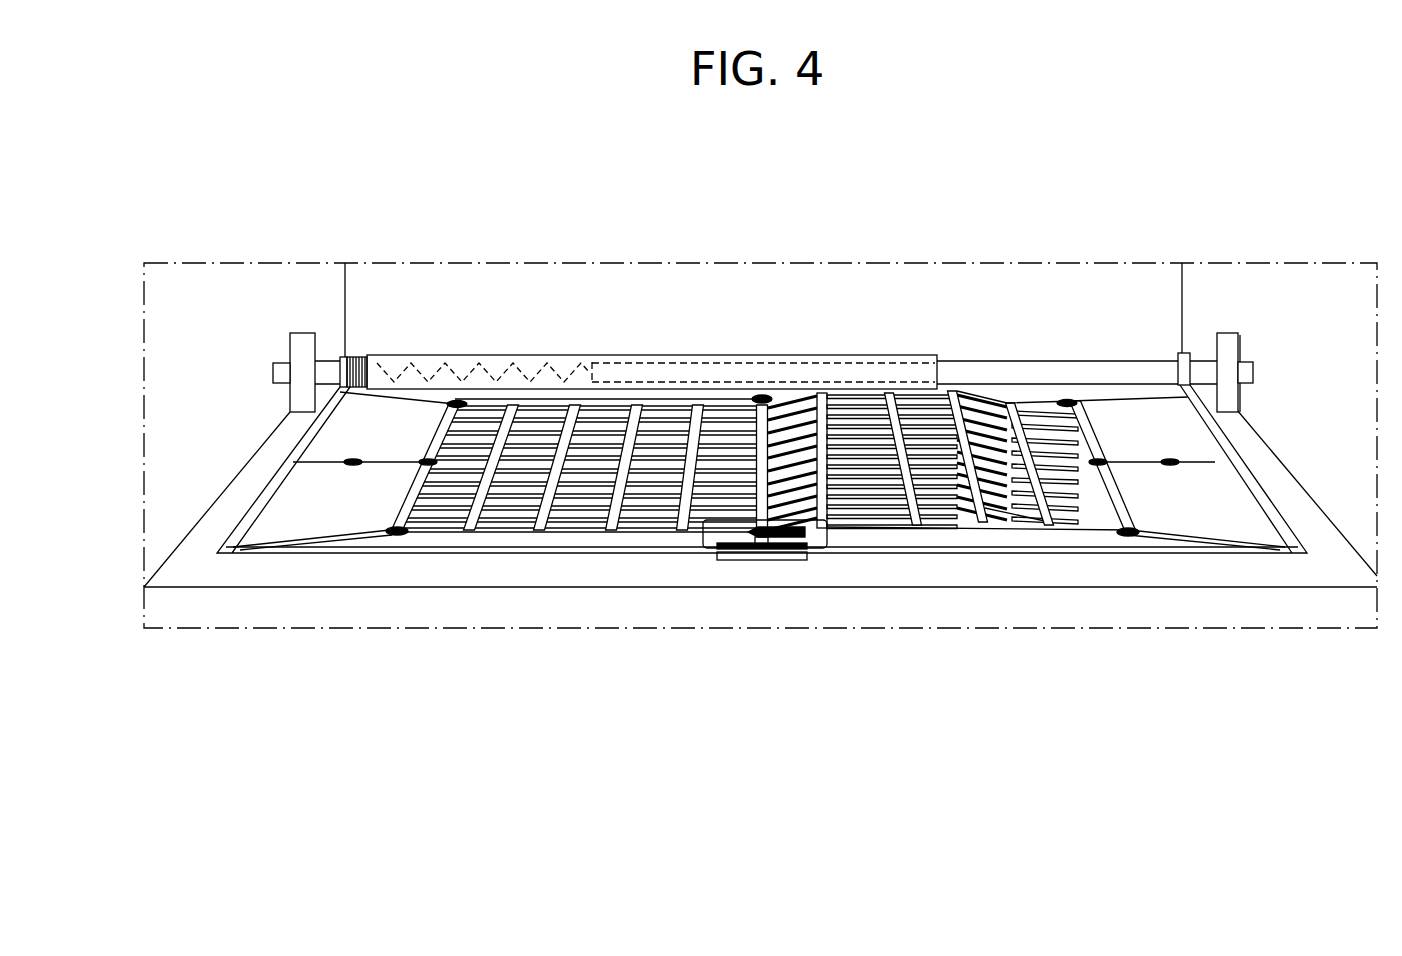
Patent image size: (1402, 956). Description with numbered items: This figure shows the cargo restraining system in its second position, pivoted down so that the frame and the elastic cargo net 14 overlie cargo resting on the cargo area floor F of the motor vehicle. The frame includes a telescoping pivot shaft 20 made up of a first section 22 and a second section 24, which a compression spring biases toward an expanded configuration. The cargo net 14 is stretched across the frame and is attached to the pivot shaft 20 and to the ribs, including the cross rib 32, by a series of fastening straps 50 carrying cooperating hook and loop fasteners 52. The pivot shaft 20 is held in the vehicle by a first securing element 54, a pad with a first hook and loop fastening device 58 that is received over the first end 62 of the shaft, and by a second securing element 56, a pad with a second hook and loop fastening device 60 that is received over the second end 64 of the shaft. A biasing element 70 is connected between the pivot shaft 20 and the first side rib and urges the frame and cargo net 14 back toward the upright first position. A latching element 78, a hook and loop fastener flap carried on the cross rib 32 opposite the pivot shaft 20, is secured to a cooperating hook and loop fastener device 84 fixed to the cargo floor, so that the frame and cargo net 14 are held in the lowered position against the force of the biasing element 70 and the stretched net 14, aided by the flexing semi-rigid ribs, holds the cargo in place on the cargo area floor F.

The cargo net 14 is at (697, 450).
The pivot shaft 20 is at (833, 355).
The first section 22 is at (622, 362).
The second section 24 is at (1007, 370).
The cross rib 32 is at (607, 553).
The fastening straps 50 is at (378, 355).
The hook and loop fasteners 52 is at (1143, 400).
The first securing element 54 is at (303, 340).
The second securing element 56 is at (1227, 340).
The first hook and loop fastening device 58 is at (290, 393).
The second hook and loop fastening device 60 is at (1237, 400).
The first end 62 is at (278, 362).
The second end 64 is at (1253, 367).
The biasing element 70 is at (353, 357).
The latching element 78 is at (723, 560).
The cooperating hook and loop fastener device 84 is at (783, 560).
The cargo area floor F is at (907, 540).